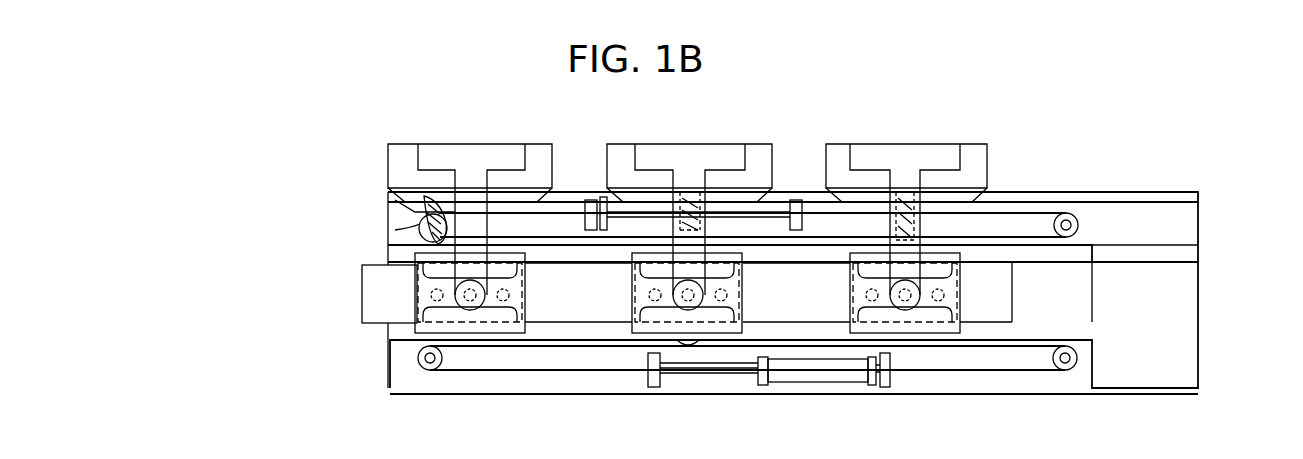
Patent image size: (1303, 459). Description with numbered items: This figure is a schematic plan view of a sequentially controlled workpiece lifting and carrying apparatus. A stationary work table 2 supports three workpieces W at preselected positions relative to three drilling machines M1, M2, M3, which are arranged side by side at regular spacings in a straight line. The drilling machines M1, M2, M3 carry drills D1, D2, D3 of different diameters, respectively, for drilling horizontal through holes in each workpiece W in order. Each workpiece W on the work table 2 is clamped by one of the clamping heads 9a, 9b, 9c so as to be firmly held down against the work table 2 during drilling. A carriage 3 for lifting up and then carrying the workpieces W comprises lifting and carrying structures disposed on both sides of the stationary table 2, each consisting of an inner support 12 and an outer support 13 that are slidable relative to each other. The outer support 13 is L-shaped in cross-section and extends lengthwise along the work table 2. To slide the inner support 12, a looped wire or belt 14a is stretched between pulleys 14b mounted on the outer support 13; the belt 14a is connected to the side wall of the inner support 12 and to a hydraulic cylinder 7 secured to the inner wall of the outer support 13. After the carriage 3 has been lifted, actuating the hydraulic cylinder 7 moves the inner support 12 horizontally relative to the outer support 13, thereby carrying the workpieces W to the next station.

The drilling machine M1 is at (545, 150).
The drilling machine M2 is at (758, 152).
The drilling machine M3 is at (975, 150).
The stationary work table 2 is at (375, 302).
The carriage 3 is at (1145, 188).
The hydraulic cylinder 7 is at (597, 212).
The clamping head 9a is at (517, 292).
The clamping head 9b is at (740, 300).
The clamping head 9c is at (955, 292).
The inner support 12 is at (1070, 254).
The outer support 13 is at (1170, 246).
The belt 14a is at (815, 212).
The pulleys 14b is at (428, 225).
The drill D1 is at (427, 207).
The drill D2 is at (700, 230).
The drill D3 is at (905, 228).
The workpiece W is at (480, 333).